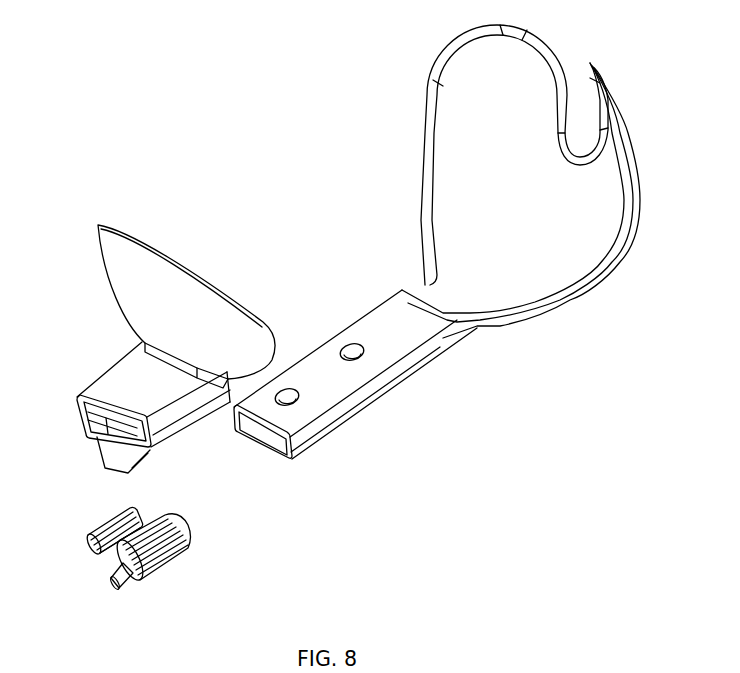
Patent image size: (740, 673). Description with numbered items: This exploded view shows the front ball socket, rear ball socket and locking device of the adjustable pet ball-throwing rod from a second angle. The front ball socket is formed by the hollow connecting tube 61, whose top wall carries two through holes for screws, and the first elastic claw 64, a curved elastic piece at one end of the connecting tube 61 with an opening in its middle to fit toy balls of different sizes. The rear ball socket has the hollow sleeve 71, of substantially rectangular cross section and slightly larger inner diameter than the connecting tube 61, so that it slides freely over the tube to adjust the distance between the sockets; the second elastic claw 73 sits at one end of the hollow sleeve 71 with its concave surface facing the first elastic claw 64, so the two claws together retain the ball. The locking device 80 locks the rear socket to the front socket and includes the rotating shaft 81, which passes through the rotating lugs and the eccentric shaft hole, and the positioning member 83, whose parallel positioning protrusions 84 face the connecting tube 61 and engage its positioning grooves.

The connecting tube 61 is at (380, 380).
The first elastic claw 64 is at (457, 152).
The hollow sleeve 71 is at (125, 371).
The second elastic claw 73 is at (143, 282).
The locking device 80 is at (164, 551).
The rotating shaft 81 is at (110, 587).
The positioning member 83 is at (190, 542).
The positioning protrusions 84 is at (168, 515).